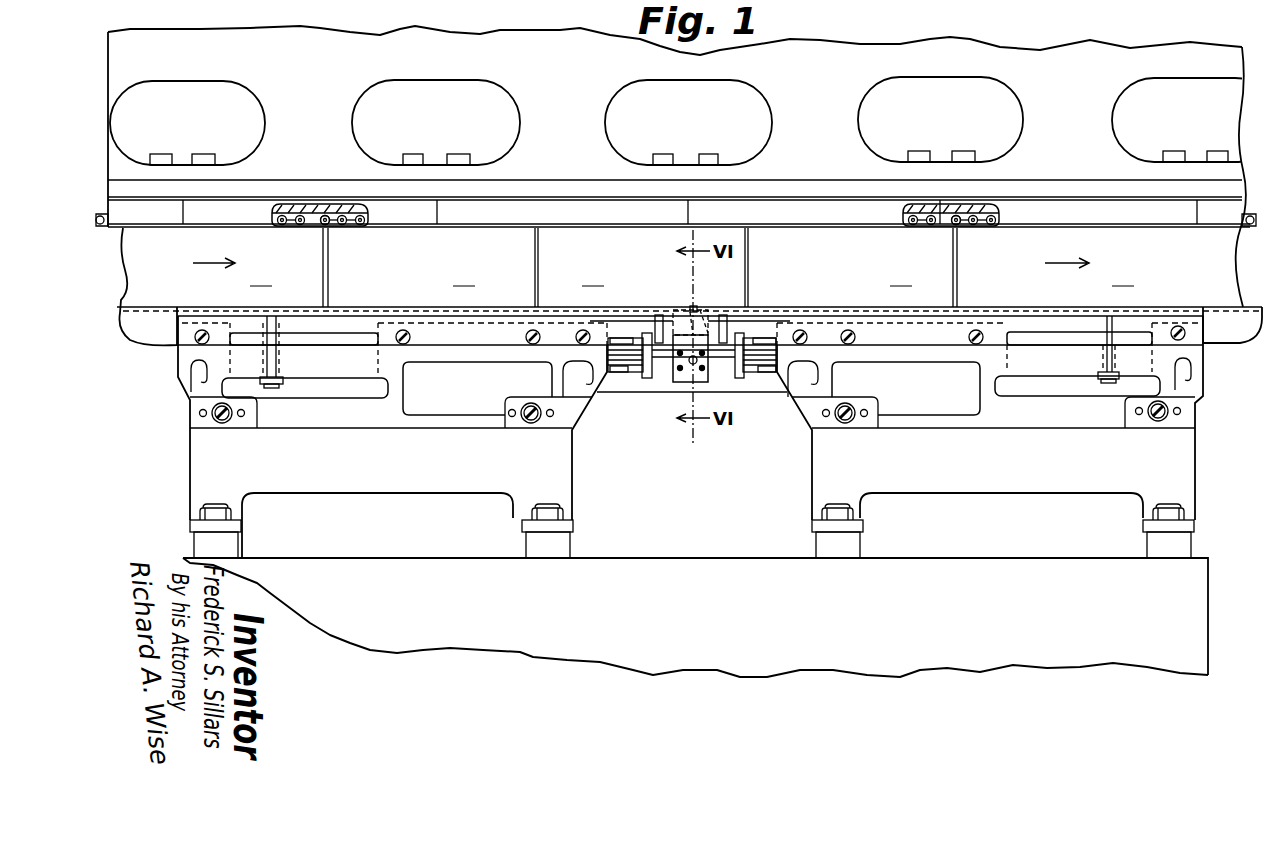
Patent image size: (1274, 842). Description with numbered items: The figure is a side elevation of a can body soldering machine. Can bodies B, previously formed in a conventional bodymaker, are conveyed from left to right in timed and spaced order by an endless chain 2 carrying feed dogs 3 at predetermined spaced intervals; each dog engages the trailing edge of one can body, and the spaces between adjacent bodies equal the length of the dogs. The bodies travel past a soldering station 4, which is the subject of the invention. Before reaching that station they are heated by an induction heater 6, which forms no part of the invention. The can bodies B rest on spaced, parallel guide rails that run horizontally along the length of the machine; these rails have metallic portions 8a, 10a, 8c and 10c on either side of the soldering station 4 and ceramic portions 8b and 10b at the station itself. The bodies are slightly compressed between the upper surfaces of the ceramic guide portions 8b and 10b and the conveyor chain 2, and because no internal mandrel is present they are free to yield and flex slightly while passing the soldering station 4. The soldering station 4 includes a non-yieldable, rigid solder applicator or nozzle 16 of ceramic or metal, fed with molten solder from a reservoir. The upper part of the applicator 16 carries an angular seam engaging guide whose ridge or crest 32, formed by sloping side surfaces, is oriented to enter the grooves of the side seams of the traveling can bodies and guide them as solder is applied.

The endless chain 2 is at (307, 226).
The feed dogs 3 is at (330, 228).
The soldering station 4 is at (673, 407).
The induction heater 6 is at (495, 307).
The solder applicator 16 is at (703, 378).
The ridge or crest 32 is at (684, 305).
The metallic guide rail portion 8a is at (431, 267).
The metallic guide rail portion 10a is at (348, 307).
The ceramic guide rail portion 8b is at (674, 267).
The ceramic guide rail portion 10b is at (745, 283).
The metallic guide rail portion 8c is at (886, 267).
The metallic guide rail portion 10c is at (962, 307).
The can bodies B is at (689, 286).